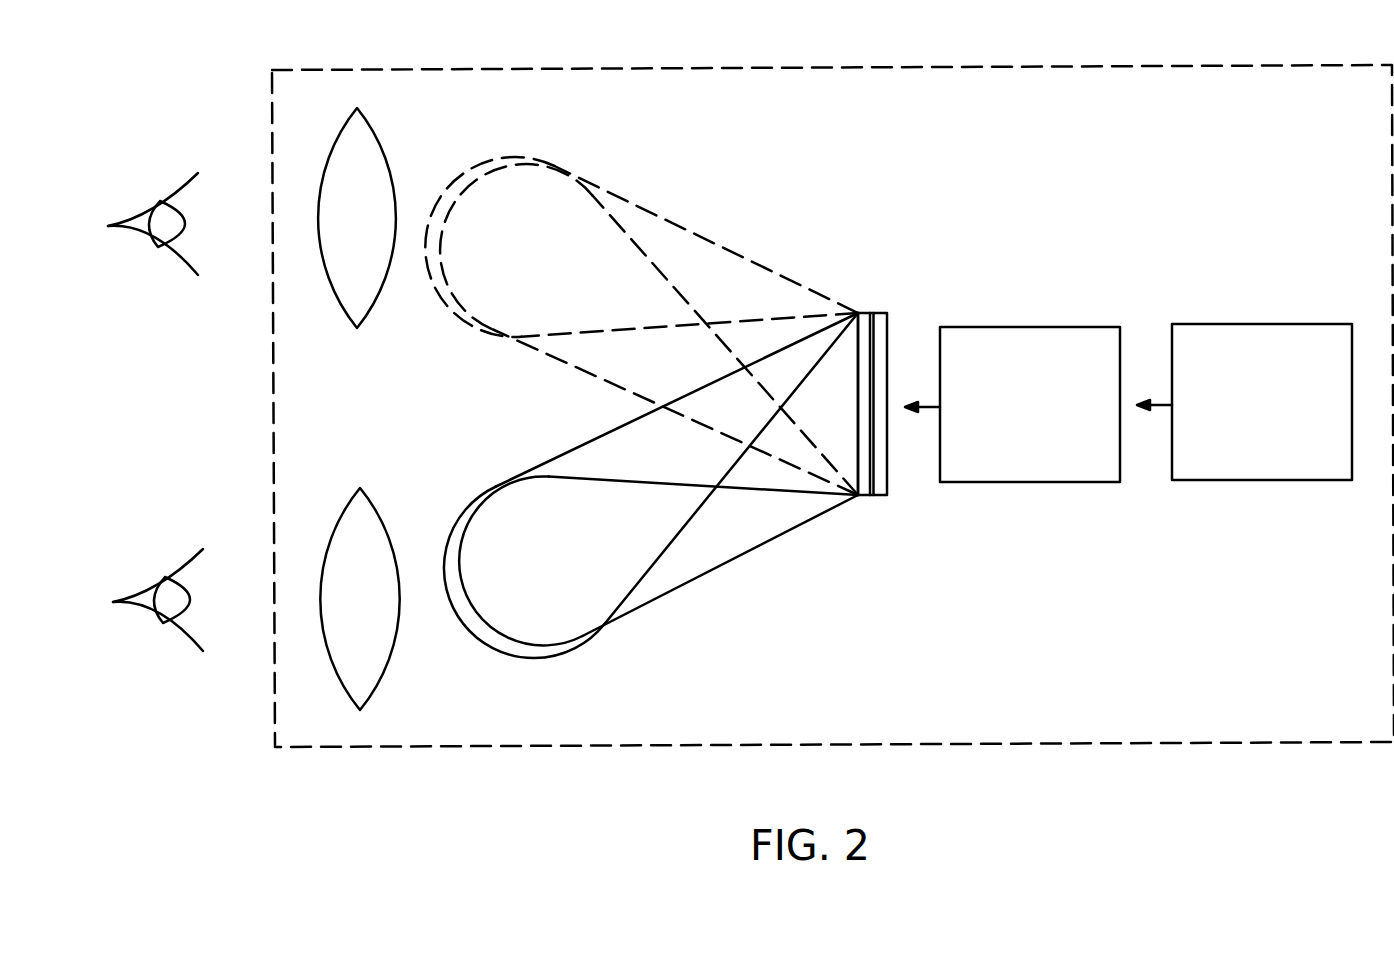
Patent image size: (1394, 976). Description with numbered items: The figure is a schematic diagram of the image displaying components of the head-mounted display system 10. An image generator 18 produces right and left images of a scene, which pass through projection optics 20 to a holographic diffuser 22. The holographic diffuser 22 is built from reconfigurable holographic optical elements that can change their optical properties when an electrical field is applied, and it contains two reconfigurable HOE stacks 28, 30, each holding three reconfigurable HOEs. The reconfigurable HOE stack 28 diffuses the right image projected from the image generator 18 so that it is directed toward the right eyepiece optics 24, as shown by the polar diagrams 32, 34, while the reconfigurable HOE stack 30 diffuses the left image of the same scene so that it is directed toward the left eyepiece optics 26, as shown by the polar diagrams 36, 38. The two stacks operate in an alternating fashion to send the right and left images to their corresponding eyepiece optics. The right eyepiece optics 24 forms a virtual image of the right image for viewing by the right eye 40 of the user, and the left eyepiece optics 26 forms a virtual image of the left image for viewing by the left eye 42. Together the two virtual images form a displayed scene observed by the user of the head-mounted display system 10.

The head-mounted display system 10 is at (1176, 70).
The image generator 18 is at (1255, 324).
The projection optics 20 is at (1035, 327).
The holographic diffuser 22 is at (895, 404).
The right eyepiece optics 24 is at (377, 683).
The left eyepiece optics 26 is at (335, 295).
The reconfigurable HOE stack 28 is at (880, 496).
The reconfigurable HOE stack 30 is at (862, 497).
The polar diagram 32 is at (630, 597).
The polar diagram 34 is at (707, 577).
The polar diagram 36 is at (705, 240).
The polar diagram 38 is at (623, 230).
The right eye 40 is at (140, 592).
The left eye 42 is at (138, 217).